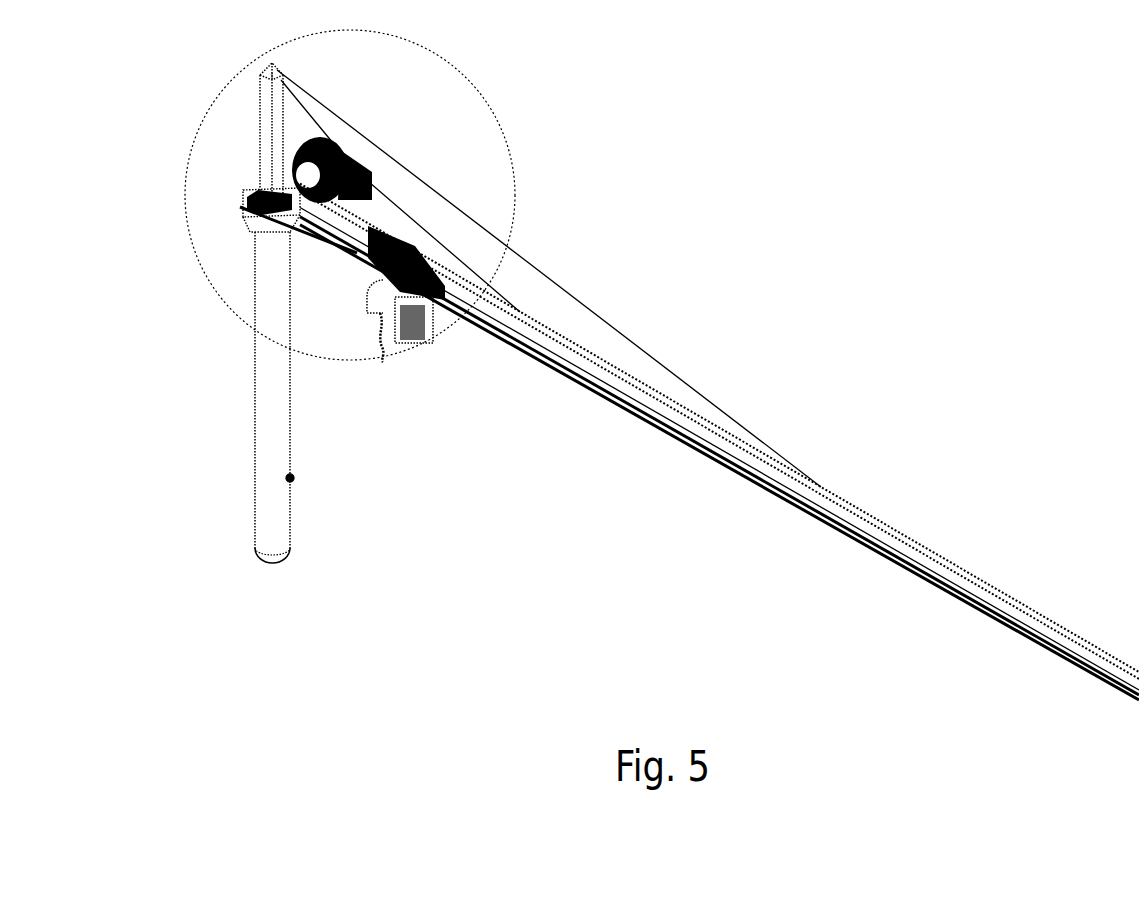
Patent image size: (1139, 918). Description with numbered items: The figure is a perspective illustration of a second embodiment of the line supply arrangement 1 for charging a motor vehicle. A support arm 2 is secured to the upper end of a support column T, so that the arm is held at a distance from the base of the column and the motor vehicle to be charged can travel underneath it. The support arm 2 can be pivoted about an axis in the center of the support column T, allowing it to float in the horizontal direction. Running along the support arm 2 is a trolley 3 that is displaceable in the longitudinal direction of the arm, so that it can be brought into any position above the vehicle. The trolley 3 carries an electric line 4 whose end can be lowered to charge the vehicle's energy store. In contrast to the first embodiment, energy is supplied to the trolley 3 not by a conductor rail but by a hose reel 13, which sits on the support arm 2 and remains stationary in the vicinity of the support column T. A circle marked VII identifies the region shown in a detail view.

The line supply arrangement 1 is at (642, 221).
The support arm 2 is at (990, 587).
The trolley 3 is at (383, 362).
The electric line 4 is at (423, 327).
The hose reel 13 is at (330, 150).
The support column T is at (258, 432).
The detail circle VII is at (470, 80).